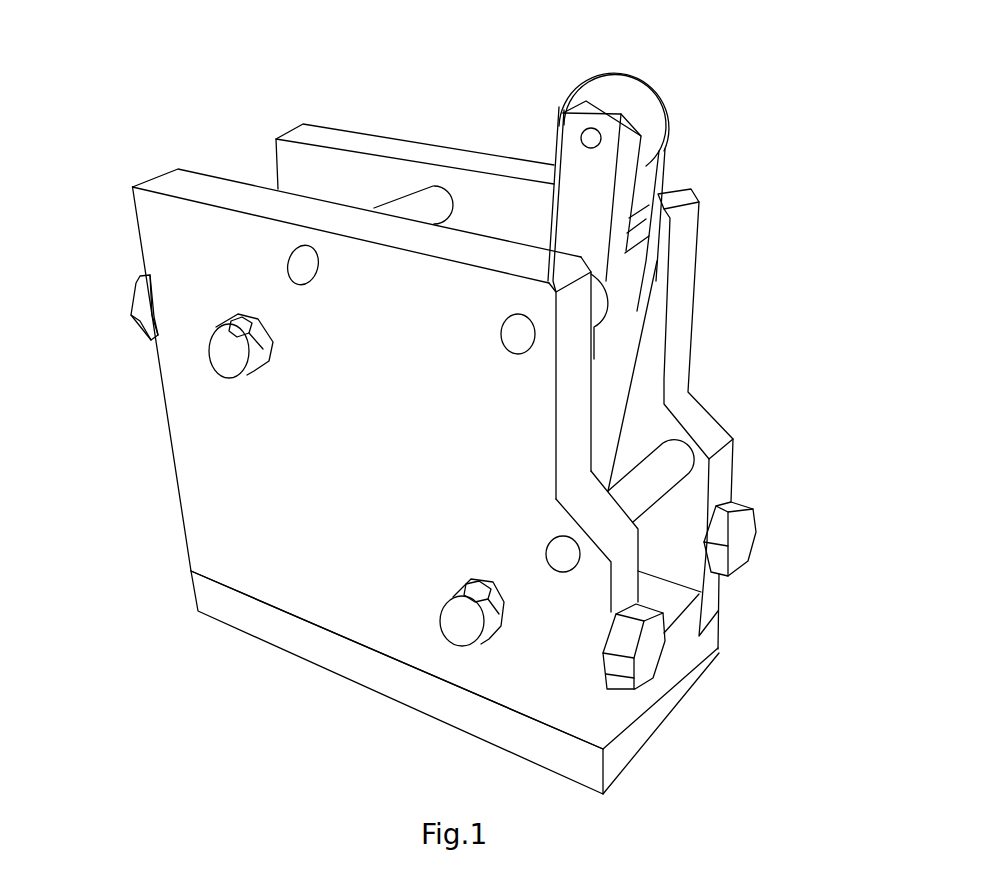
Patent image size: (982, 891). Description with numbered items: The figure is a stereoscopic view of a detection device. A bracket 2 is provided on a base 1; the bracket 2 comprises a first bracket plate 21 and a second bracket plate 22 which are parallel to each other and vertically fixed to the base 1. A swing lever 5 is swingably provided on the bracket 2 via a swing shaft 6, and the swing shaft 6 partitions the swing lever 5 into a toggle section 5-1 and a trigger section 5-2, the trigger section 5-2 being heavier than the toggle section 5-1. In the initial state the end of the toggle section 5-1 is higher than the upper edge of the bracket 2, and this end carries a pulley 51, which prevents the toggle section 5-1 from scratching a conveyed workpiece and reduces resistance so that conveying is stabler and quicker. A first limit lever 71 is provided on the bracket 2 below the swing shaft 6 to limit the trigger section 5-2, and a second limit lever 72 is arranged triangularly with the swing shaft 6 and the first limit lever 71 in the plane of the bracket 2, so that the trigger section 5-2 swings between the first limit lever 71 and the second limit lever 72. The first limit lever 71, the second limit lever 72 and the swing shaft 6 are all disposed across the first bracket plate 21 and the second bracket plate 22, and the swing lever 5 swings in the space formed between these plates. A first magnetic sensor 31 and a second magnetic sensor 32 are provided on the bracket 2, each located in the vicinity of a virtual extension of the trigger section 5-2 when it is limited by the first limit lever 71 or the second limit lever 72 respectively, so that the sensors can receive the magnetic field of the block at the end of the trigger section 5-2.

The base 1 is at (265, 625).
The bracket 2 is at (168, 145).
The first bracket plate 21 is at (320, 128).
The second bracket plate 22 is at (162, 220).
The first magnetic sensor 31 is at (483, 623).
The second magnetic sensor 32 is at (230, 362).
The swing lever 5 is at (636, 310).
The toggle section 5-1 is at (630, 191).
The trigger section 5-2 is at (625, 424).
The pulley 51 is at (625, 93).
The swing shaft 6 is at (512, 336).
The first limit lever 71 is at (652, 480).
The second limit lever 72 is at (417, 207).